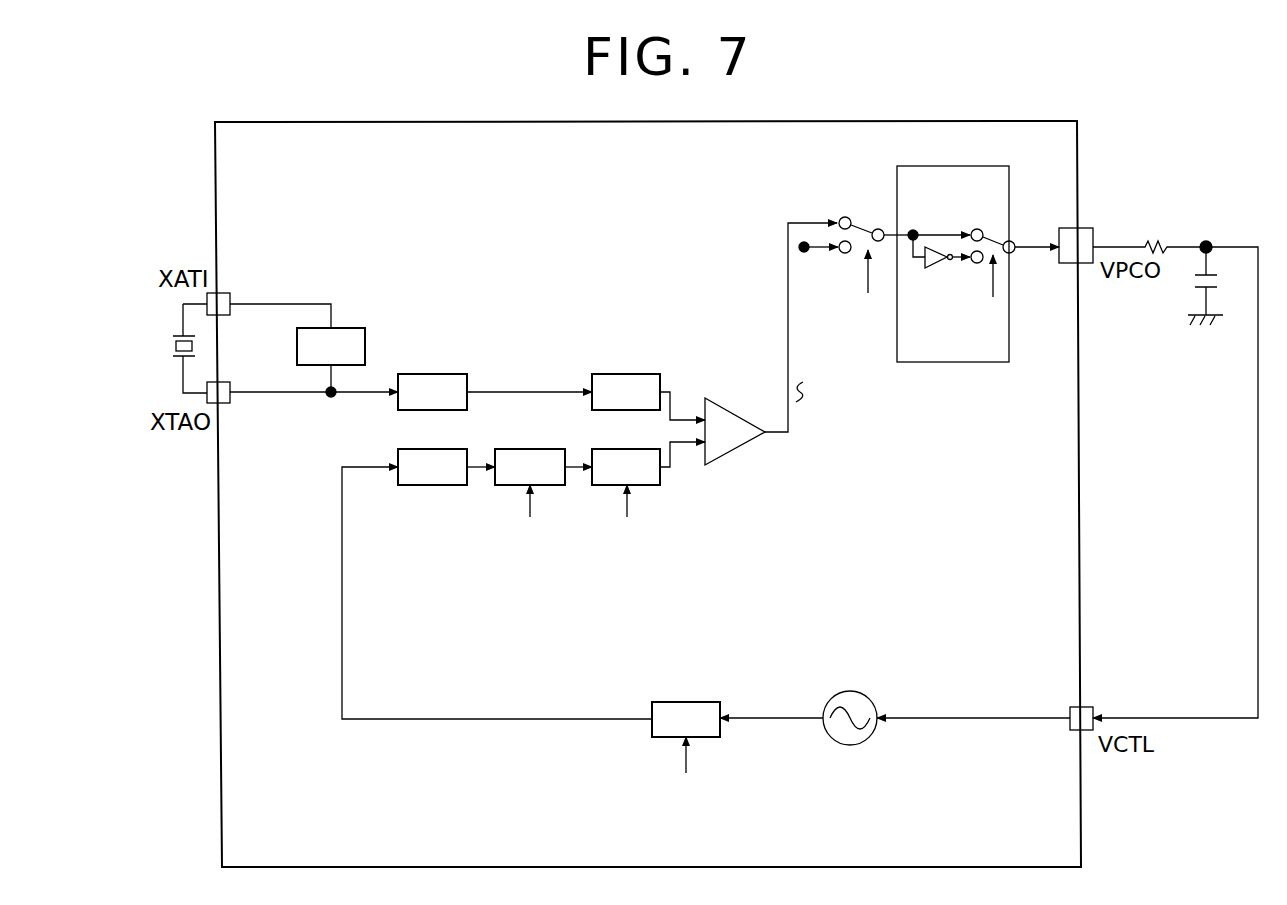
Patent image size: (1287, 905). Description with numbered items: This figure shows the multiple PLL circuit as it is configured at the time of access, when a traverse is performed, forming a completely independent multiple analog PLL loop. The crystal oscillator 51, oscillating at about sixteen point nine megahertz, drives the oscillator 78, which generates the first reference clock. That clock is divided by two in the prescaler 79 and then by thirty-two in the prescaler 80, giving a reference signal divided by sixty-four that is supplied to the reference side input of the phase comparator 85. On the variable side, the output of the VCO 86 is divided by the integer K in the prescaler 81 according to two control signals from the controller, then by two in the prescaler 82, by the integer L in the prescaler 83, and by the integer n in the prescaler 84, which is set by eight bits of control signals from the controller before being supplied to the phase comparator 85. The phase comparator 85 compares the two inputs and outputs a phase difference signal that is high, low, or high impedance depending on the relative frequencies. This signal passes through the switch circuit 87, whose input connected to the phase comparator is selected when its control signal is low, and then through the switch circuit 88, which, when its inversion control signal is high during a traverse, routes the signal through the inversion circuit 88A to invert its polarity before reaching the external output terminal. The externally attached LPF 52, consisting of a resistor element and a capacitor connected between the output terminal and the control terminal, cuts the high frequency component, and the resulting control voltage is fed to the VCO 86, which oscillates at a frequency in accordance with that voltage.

The crystal oscillator 51 is at (158, 327).
The LPF 52 is at (1188, 217).
The oscillator 78 is at (347, 328).
The prescaler 79 is at (432, 374).
The prescaler 80 is at (630, 374).
The prescaler 81 is at (688, 702).
The prescaler 82 is at (420, 449).
The prescaler 83 is at (503, 449).
The prescaler 84 is at (615, 449).
The phase comparator 85 is at (748, 422).
The VCO 86 is at (848, 746).
The switch circuit 87 is at (823, 213).
The switch circuit 88 is at (945, 305).
The inversion circuit 88A is at (937, 270).